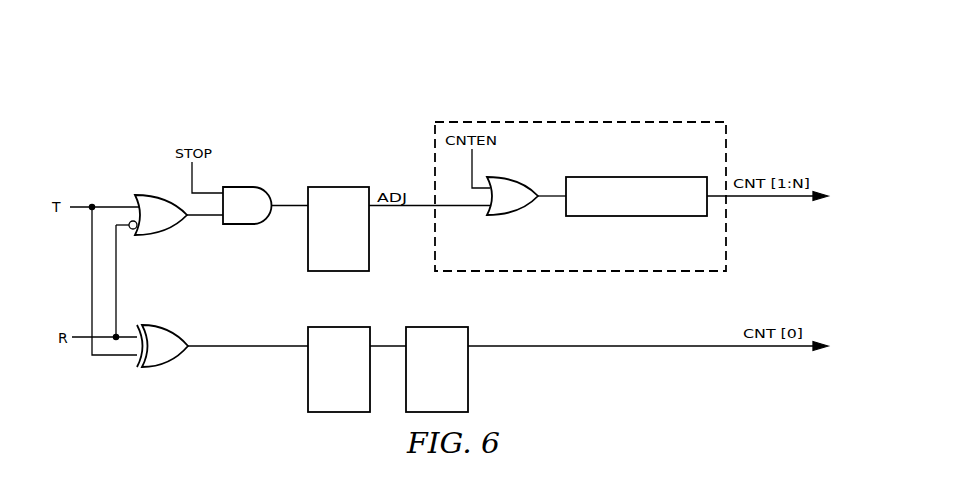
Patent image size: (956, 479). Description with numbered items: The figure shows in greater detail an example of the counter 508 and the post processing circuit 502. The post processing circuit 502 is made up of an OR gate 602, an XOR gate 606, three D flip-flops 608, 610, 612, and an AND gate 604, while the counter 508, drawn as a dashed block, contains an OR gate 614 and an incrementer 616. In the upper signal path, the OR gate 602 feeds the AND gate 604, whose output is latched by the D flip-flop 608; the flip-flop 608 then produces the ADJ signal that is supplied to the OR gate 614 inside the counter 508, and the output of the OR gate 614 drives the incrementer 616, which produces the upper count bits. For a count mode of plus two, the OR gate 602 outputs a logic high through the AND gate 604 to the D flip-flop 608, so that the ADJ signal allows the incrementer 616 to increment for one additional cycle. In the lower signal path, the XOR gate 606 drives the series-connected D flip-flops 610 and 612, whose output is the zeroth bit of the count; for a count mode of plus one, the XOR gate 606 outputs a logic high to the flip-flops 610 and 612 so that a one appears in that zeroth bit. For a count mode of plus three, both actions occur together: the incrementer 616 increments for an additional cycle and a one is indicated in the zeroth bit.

The post processing circuit 502 is at (272, 95).
The counter 508 is at (688, 121).
The OR gate 602 is at (148, 195).
The AND gate 604 is at (247, 187).
The XOR gate 606 is at (155, 367).
The D flip-flop 608 is at (345, 187).
The D flip-flop 610 is at (308, 376).
The D flip-flop 612 is at (468, 376).
The OR gate 614 is at (503, 216).
The incrementer 616 is at (642, 177).